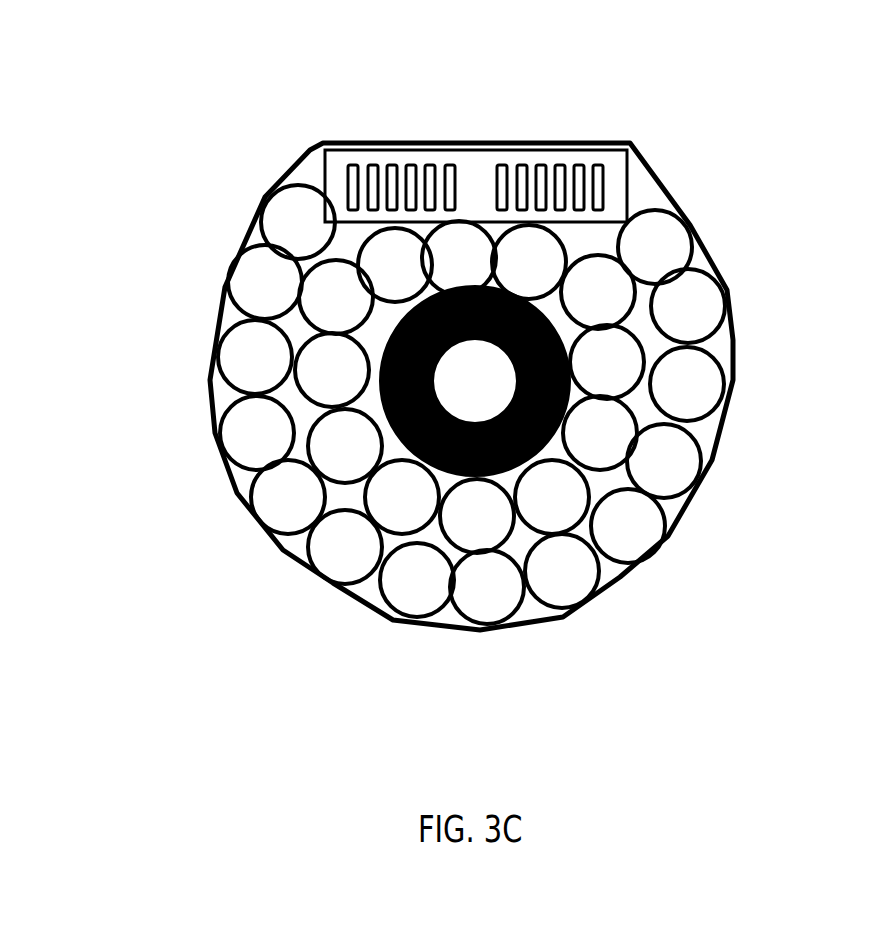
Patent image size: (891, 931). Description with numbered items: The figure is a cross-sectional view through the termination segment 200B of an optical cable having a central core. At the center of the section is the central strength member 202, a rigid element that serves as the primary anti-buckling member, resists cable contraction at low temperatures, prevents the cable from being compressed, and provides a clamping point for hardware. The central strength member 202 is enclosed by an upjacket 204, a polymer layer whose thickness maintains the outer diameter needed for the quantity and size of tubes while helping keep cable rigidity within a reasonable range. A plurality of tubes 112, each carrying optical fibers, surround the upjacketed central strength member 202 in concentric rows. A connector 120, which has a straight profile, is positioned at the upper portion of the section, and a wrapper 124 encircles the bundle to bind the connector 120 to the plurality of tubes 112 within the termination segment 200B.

The termination segment 200B is at (178, 187).
The connector 120 is at (623, 178).
The wrapper 124 is at (708, 258).
The tubes 112 is at (618, 302).
The central strength member 202 is at (492, 395).
The upjacket 204 is at (378, 373).